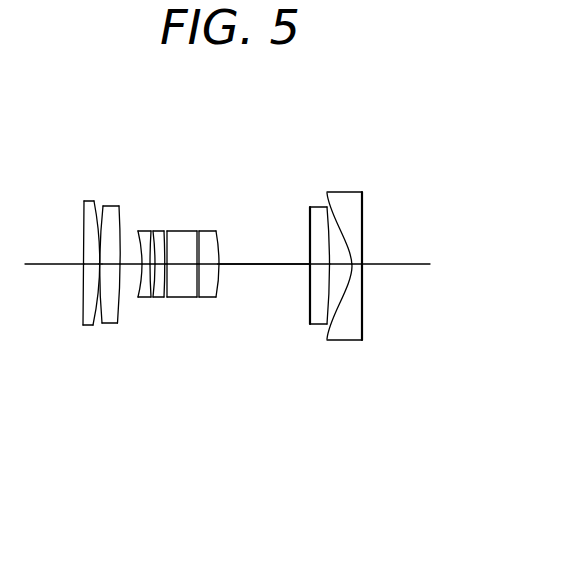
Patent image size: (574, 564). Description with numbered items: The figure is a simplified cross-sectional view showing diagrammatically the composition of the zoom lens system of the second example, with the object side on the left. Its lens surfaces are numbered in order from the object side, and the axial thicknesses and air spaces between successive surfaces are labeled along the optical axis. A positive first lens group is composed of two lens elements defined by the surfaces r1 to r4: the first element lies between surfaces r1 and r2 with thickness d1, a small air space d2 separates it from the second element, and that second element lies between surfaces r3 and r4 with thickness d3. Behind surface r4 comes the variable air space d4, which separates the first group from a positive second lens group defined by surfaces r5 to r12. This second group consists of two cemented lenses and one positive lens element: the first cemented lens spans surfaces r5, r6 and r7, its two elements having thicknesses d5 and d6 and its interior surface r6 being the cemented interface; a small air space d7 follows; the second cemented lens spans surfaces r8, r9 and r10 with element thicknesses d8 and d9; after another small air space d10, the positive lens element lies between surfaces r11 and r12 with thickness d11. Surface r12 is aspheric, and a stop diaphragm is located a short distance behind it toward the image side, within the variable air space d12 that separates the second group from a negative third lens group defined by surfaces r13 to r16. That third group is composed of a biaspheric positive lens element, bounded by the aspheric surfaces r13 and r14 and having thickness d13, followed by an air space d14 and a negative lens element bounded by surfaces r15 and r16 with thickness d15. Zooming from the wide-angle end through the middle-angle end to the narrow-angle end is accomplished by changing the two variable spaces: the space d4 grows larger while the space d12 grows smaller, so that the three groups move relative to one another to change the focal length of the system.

The first surface r1 is at (84, 202).
The second surface r2 is at (100, 205).
The third surface r3 is at (98, 205).
The fourth surface r4 is at (119, 207).
The fifth surface r5 is at (138, 231).
The sixth surface r6 is at (152, 230).
The seventh surface r7 is at (163, 230).
The eighth surface r8 is at (177, 230).
The ninth surface r9 is at (193, 230).
The tenth surface r10 is at (211, 230).
The eleventh surface r11 is at (218, 230).
The twelfth surface r12 is at (225, 230).
The thirteenth surface r13 is at (310, 207).
The fourteenth surface r14 is at (327, 208).
The fifteenth surface r15 is at (330, 193).
The sixteenth surface r16 is at (362, 193).
The first lens thickness d1 is at (92, 266).
The first air space d2 is at (101, 266).
The second lens thickness d3 is at (110, 266).
The variable air space between first and second lens groups d4 is at (129, 266).
The first element thickness of first cemented lens d5 is at (146, 266).
The second element thickness of first cemented lens d6 is at (151, 266).
The air space between cemented lenses d7 is at (158, 266).
The first element thickness of second cemented lens d8 is at (166, 266).
The second element thickness of second cemented lens d9 is at (182, 266).
The air space before positive lens element d10 is at (197, 266).
The positive lens element thickness d11 is at (208, 266).
The variable air space between second and third lens groups d12 is at (270, 266).
The biaspheric lens thickness d13 is at (315, 266).
The third-group air space d14 is at (340, 266).
The negative lens thickness d15 is at (357, 266).